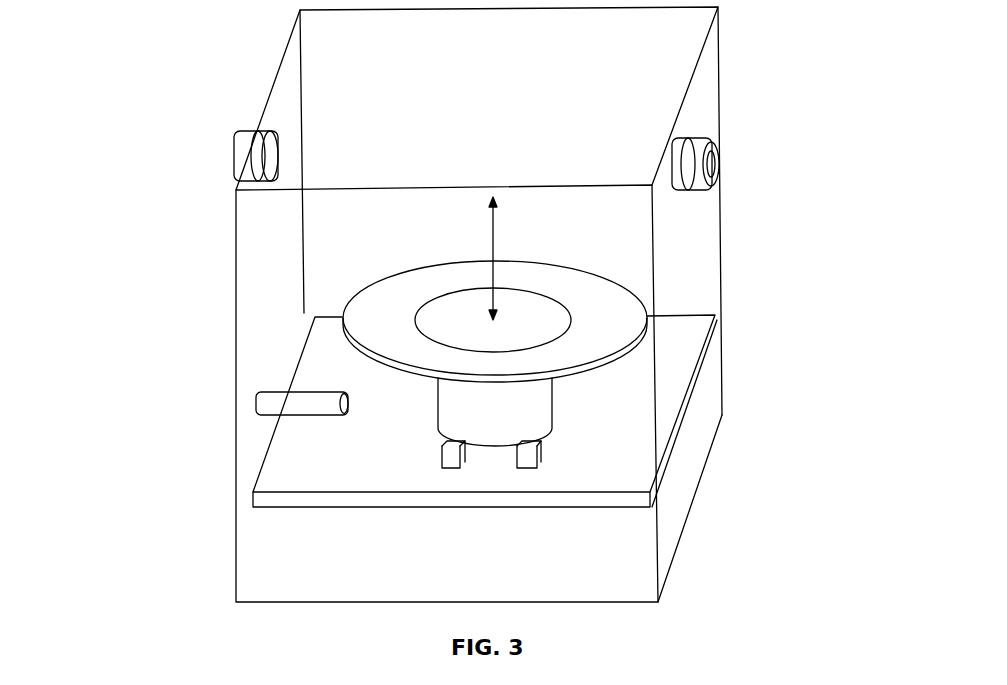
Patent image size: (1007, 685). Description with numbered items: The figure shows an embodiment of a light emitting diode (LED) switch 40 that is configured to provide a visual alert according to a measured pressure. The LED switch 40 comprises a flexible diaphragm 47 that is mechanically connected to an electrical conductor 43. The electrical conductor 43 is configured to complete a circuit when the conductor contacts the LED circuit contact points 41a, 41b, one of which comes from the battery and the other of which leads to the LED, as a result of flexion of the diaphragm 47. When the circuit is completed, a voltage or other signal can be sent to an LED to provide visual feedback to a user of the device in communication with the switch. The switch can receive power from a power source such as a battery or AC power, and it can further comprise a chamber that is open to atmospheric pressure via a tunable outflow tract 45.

The LED switch 40 is at (121, 94).
The LED circuit contact point 41a is at (438, 468).
The LED circuit contact point 41b is at (552, 458).
The electrical conductor 43 is at (533, 398).
The tunable outflow tract 45 is at (238, 395).
The flexible diaphragm 47 is at (602, 283).